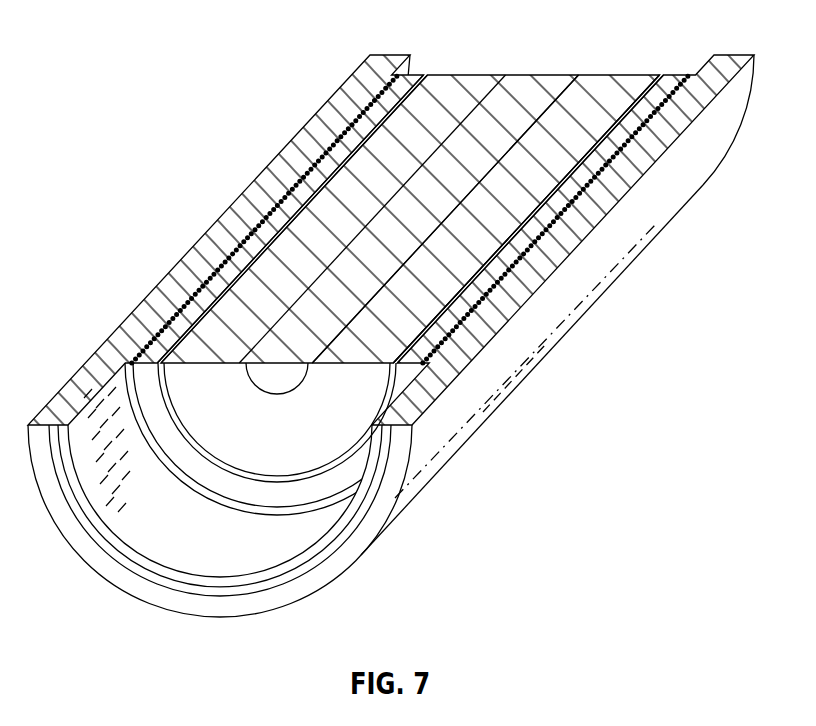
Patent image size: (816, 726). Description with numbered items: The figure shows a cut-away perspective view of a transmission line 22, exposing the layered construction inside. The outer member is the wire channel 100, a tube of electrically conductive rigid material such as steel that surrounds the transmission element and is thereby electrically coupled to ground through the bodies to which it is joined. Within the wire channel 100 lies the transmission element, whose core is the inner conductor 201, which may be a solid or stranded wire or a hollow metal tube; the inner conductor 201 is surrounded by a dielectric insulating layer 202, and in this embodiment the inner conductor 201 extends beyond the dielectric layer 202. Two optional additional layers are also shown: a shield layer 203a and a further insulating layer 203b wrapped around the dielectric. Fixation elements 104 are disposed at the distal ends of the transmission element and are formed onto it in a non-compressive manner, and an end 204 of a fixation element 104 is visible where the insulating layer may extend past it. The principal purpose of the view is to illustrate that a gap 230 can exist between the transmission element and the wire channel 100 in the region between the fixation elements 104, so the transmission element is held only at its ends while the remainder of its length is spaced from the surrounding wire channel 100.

The transmission line 22 is at (188, 52).
The wire channel 100 is at (603, 263).
The fixation element 104 is at (315, 155).
The inner conductor 201 is at (522, 82).
The insulating layer 202 is at (603, 82).
The shield layer 203a is at (233, 470).
The insulating layer 203b is at (195, 467).
The end of the fixation element 204 is at (450, 68).
The gap 230 is at (247, 232).